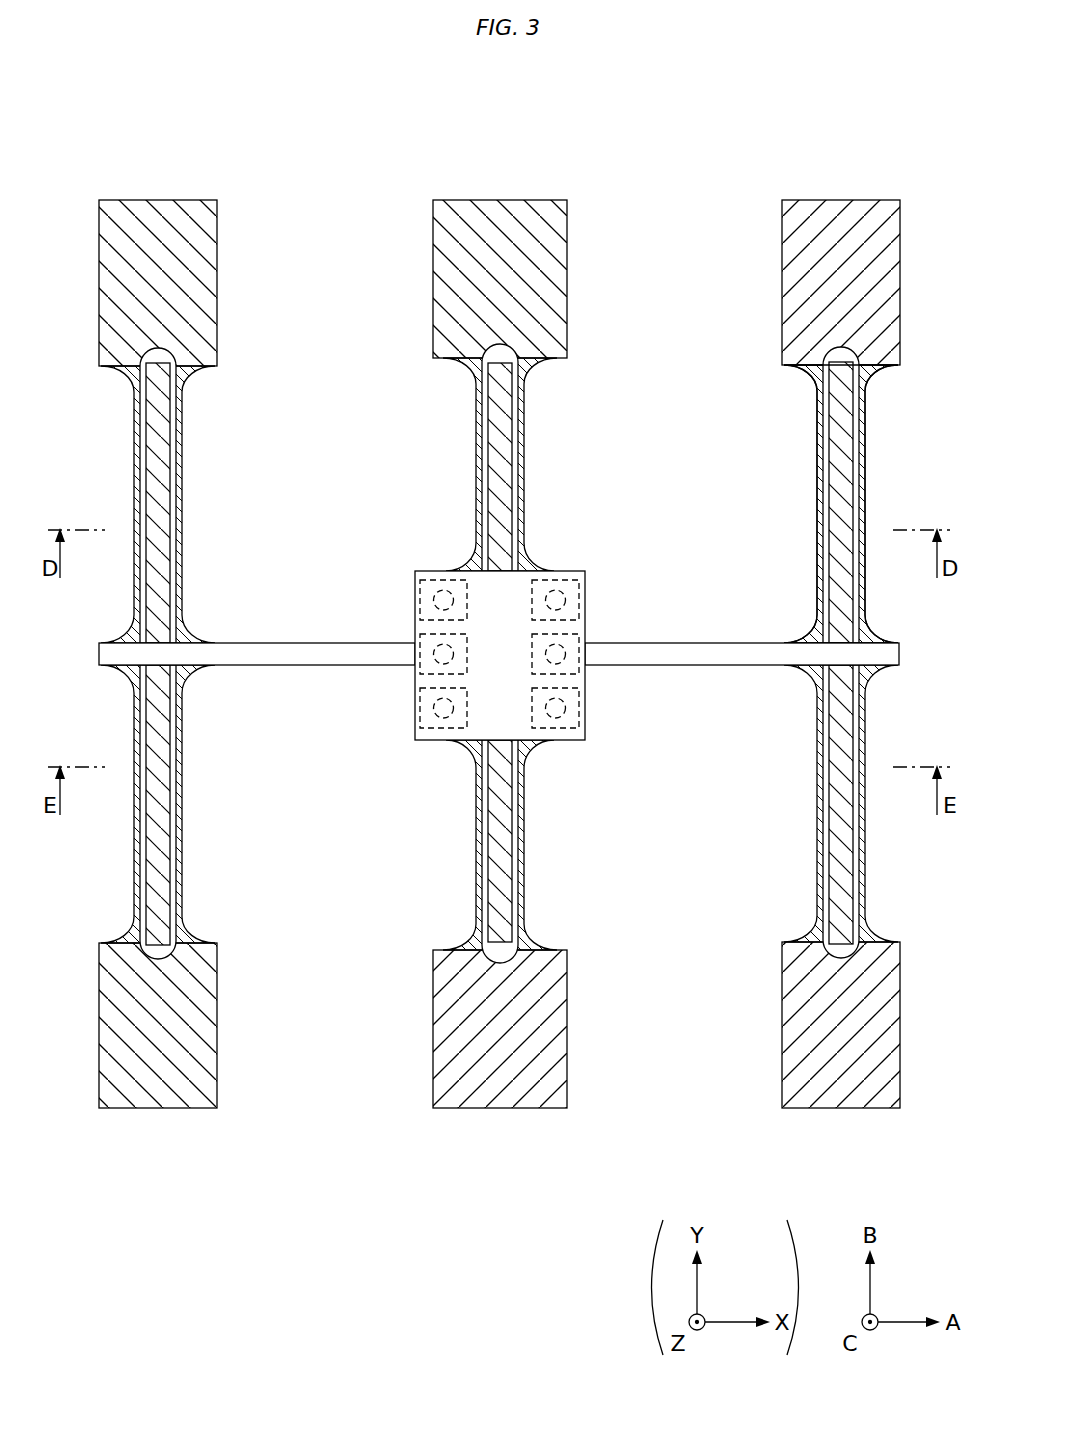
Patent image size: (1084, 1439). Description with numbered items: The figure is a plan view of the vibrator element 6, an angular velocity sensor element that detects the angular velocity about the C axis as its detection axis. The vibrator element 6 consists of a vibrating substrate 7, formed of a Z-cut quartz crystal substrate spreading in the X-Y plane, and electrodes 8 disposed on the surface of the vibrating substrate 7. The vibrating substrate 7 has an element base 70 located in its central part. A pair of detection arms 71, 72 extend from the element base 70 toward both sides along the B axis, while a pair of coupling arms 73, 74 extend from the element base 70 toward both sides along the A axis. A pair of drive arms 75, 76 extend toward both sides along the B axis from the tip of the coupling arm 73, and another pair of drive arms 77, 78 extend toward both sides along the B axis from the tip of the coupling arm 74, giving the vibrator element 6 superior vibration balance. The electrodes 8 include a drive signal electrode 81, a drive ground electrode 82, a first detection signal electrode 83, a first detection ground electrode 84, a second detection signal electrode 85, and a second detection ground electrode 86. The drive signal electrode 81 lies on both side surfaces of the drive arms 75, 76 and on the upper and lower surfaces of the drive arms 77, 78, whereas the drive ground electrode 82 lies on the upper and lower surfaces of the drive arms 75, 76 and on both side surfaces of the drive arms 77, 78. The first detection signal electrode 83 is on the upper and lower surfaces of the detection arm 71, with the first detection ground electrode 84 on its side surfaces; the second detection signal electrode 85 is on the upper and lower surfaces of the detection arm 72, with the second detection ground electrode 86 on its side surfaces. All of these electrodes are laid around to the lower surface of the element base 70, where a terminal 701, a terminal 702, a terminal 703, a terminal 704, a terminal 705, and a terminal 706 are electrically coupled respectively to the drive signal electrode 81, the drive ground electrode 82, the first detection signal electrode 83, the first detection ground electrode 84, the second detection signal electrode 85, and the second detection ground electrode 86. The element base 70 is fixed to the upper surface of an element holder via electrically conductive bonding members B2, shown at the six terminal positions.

The vibrator element 6 is at (450, 148).
The vibrating substrate 7 is at (499, 660).
The element base 70 is at (498, 675).
The terminal 701 is at (413, 671).
The terminal 702 is at (578, 660).
The terminal 703 is at (570, 730).
The terminal 704 is at (425, 740).
The terminal 705 is at (571, 584).
The terminal 706 is at (413, 588).
The detection arm 71 is at (500, 192).
The detection arm 72 is at (500, 1120).
The coupling arm 73 is at (747, 678).
The coupling arm 74 is at (244, 630).
The drive arm 75 is at (843, 192).
The drive arm 76 is at (843, 1120).
The drive arm 77 is at (158, 192).
The drive arm 78 is at (160, 1120).
The electrodes 8 is at (886, 624).
The drive signal electrode 81 is at (152, 565).
The drive ground electrode 82 is at (137, 492).
The first detection signal electrode 83 is at (500, 470).
The first detection ground electrode 84 is at (478, 470).
The second detection signal electrode 85 is at (500, 838).
The second detection ground electrode 86 is at (478, 830).
The bonding members B2 is at (442, 582).